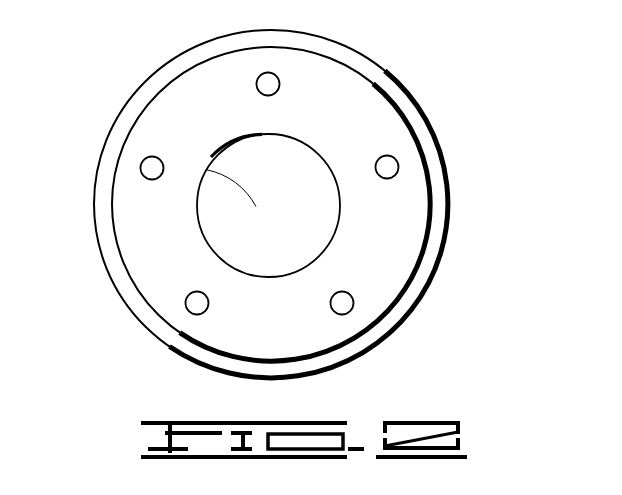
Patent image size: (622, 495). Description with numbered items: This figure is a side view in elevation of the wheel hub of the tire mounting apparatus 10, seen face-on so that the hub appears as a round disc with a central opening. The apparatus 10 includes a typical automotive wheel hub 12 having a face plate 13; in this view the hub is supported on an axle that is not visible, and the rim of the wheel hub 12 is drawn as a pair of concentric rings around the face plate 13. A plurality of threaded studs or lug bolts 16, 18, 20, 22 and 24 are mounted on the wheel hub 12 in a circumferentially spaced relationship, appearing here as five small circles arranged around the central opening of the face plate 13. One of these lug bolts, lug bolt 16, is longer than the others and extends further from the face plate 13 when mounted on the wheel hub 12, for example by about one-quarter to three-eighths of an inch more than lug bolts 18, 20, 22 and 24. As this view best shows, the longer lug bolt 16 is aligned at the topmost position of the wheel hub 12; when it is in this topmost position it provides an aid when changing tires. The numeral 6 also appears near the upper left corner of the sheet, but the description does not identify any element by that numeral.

The disc 6 is at (9, 44).
The tire mounting apparatus 10 is at (420, 58).
The wheel hub 12 is at (93, 197).
The face plate 13 is at (172, 232).
The lug bolt 16 is at (277, 75).
The lug bolt 18 is at (396, 160).
The lug bolt 20 is at (351, 311).
The lug bolt 22 is at (189, 311).
The lug bolt 24 is at (143, 161).